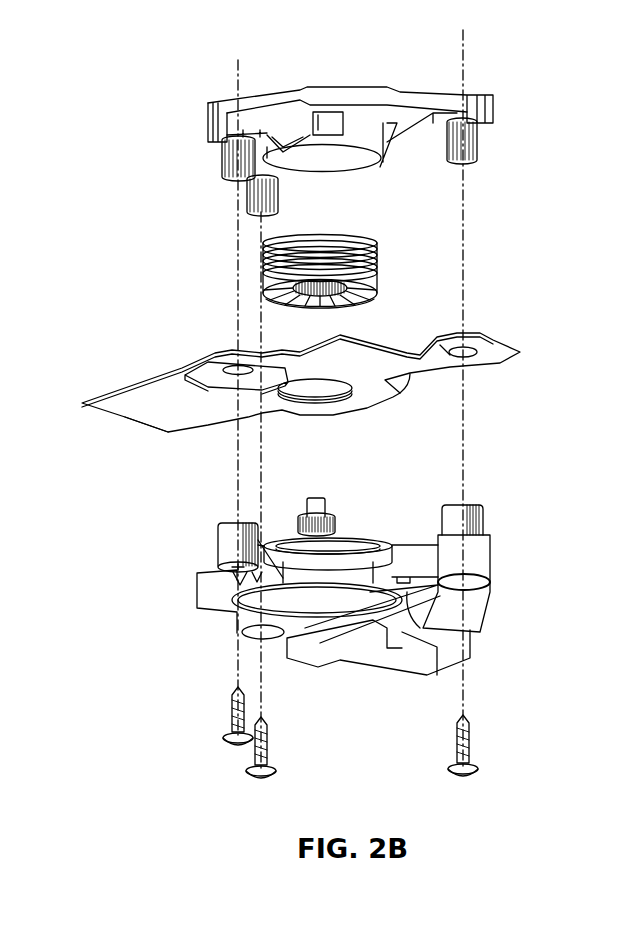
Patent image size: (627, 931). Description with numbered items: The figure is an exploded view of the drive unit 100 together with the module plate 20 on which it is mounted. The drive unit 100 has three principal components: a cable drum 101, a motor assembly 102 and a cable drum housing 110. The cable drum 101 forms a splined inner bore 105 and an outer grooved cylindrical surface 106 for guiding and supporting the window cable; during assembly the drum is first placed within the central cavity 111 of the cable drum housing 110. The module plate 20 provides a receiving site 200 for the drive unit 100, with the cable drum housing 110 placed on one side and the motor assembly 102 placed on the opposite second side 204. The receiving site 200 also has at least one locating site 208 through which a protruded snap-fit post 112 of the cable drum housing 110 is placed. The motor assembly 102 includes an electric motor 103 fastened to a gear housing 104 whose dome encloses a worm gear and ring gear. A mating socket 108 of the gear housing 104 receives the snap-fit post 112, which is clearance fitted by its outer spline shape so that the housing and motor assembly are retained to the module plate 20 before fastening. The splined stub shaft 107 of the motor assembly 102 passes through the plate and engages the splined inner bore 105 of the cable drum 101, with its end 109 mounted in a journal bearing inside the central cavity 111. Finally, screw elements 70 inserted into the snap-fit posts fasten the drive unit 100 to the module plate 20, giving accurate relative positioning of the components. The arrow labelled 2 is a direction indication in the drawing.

The drive unit 100 is at (140, 92).
The cable drum housing 110 is at (210, 125).
The central cavity 111 is at (338, 162).
The snap-fit post 112 is at (480, 142).
The outer grooved cylindrical surface 106 is at (378, 262).
The cable drum 101 is at (265, 298).
The splined inner bore 105 is at (295, 303).
The receiving site 200 is at (137, 387).
The second side 204 is at (157, 413).
The direction indication 2 is at (530, 365).
The locating site 208 is at (28, 510).
The module plate 20 is at (0, 549).
The splined stub shaft 107 is at (293, 517).
The end of the splined stub shaft 109 is at (318, 506).
The mating socket 108 is at (485, 520).
The gear housing 104 is at (223, 620).
The electric motor 103 is at (442, 665).
The motor assembly 102 is at (335, 683).
The screw element 70 is at (232, 705).